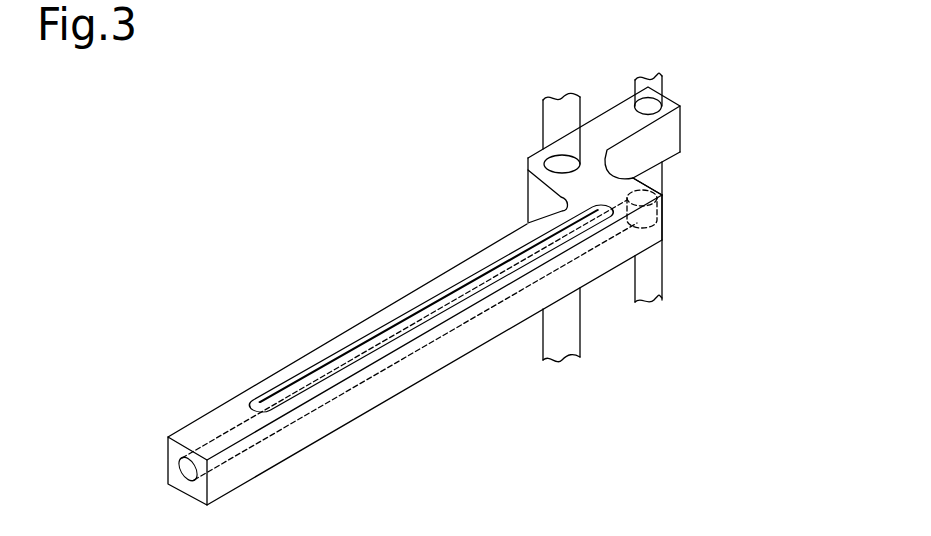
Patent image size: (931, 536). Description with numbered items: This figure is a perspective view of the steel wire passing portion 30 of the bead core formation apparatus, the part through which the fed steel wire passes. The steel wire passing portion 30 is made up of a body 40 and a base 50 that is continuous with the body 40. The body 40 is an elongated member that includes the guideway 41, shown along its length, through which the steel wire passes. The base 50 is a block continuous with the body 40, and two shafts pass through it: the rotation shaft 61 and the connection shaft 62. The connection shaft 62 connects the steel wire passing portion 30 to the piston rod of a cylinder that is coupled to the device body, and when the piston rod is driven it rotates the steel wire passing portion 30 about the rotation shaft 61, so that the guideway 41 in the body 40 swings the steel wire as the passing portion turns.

The steel wire passing portion 30 is at (784, 102).
The body 40 is at (415, 341).
The guideway 41 is at (357, 387).
The base 50 is at (606, 118).
The rotation shaft 61 is at (543, 105).
The connection shaft 62 is at (664, 78).